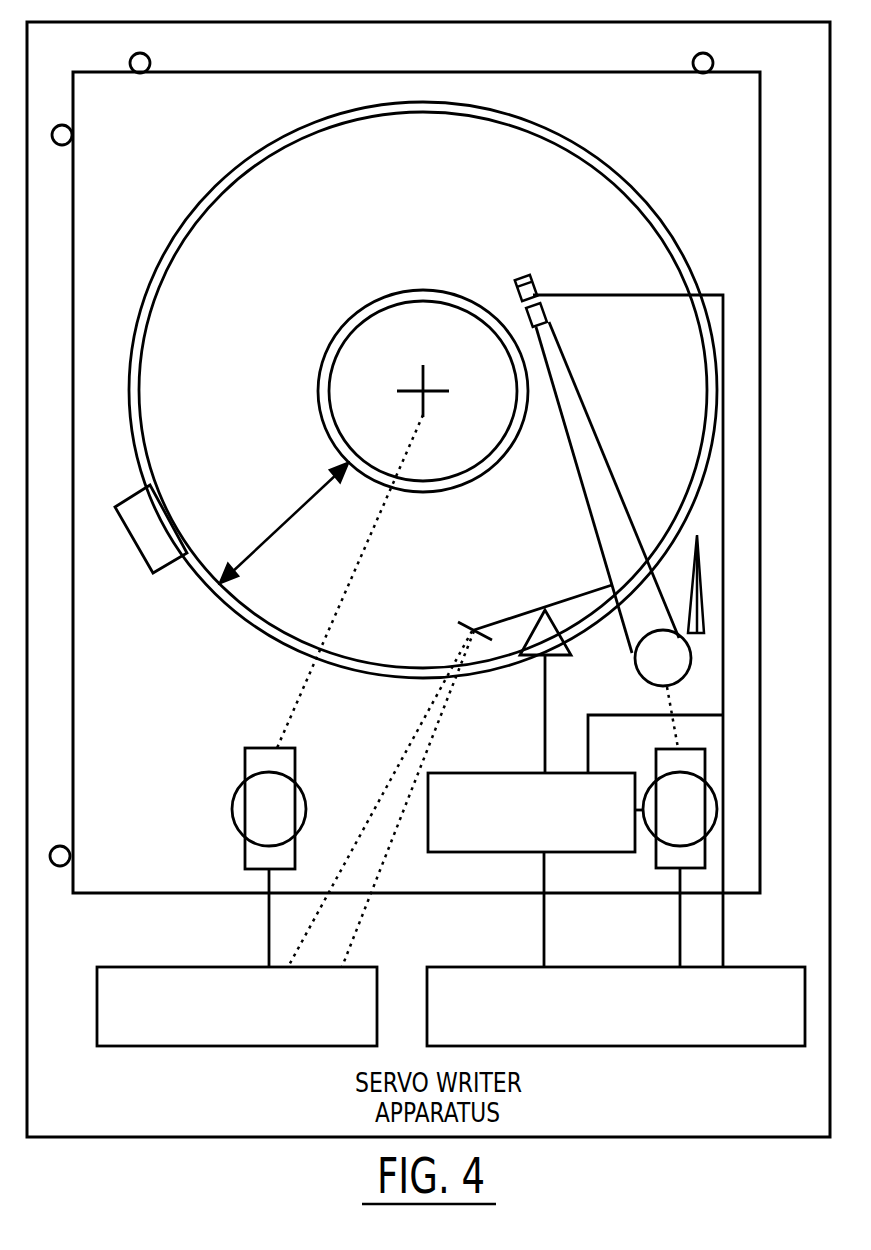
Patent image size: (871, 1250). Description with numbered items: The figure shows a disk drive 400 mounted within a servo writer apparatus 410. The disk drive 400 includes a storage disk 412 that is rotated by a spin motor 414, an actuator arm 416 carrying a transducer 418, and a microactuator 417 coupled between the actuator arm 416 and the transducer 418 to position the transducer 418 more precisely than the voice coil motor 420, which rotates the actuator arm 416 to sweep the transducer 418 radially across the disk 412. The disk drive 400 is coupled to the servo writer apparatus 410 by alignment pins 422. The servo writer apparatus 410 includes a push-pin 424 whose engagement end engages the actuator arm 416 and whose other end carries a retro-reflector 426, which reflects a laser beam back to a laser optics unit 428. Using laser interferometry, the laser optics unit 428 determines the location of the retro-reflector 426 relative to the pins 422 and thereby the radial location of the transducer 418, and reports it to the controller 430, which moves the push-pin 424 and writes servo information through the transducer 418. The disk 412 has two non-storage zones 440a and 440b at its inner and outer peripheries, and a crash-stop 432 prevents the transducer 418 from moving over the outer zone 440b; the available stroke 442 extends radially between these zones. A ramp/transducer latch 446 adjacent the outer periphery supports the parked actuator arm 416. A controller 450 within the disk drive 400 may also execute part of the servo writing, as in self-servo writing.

The disk drive 400 is at (103, 894).
The servo writer apparatus 410 is at (660, 1138).
The storage disk 412 is at (423, 390).
The spin motor 414 is at (232, 805).
The actuator arm 416 is at (607, 506).
The microactuator 417 is at (545, 312).
The transducer 418 is at (528, 280).
The voice coil motor 420 is at (665, 855).
The alignment pins 422 is at (150, 61).
The push-pin 424 is at (585, 592).
The retro-reflector 426 is at (460, 623).
The laser optics unit 428 is at (228, 1047).
The controller 430 is at (635, 1047).
The crash-stop 432 is at (700, 582).
The non-storage zone 440a is at (327, 385).
The non-storage zone 440b is at (135, 368).
The available stroke 442 is at (265, 547).
The ramp/transducer latch 446 is at (137, 549).
The controller 450 is at (500, 853).